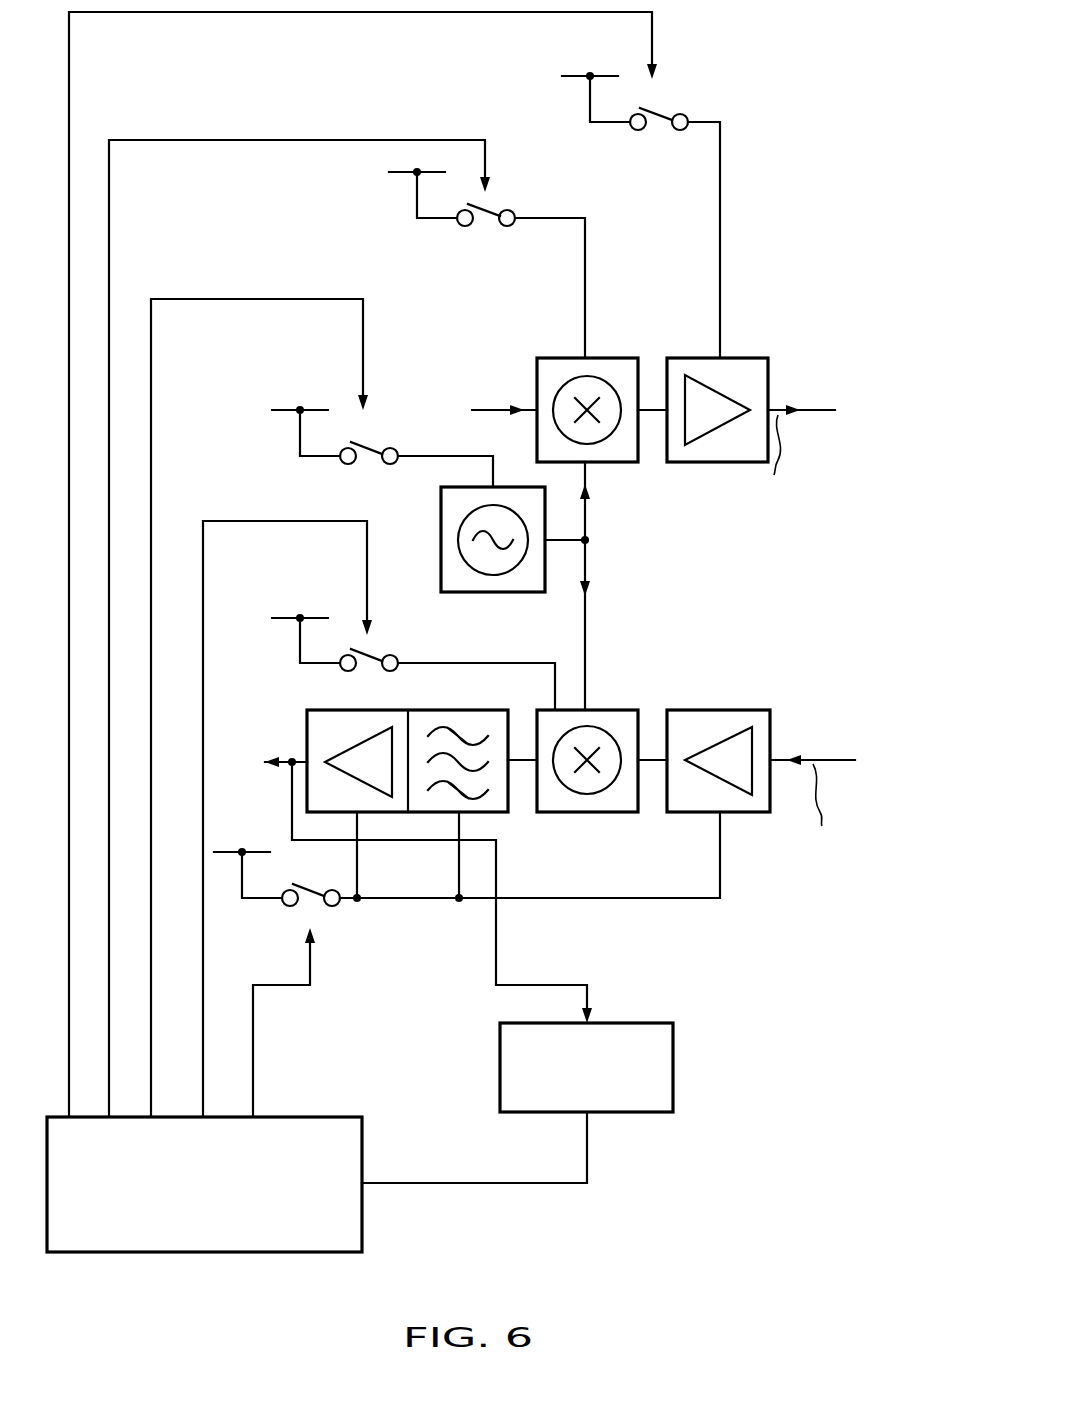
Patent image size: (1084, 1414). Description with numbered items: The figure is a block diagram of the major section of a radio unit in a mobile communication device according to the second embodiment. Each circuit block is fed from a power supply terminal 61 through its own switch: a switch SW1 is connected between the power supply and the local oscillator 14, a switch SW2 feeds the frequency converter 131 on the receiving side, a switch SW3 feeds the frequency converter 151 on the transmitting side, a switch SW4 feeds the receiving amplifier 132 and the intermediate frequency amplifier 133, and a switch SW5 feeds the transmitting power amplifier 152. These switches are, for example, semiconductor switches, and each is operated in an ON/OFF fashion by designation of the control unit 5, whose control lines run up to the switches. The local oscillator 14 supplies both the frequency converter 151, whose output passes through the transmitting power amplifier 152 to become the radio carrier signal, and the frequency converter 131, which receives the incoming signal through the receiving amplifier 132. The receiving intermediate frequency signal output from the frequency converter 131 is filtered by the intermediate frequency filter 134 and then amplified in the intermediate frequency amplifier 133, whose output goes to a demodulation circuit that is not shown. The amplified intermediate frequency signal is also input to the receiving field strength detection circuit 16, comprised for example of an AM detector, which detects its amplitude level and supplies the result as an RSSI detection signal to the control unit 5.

The control unit 5 is at (362, 1148).
The local oscillator 14 is at (492, 592).
The receiving field strength detection circuit 16 is at (673, 1062).
The power supply terminal 61 is at (580, 70).
The frequency converter 131 is at (600, 814).
The receiving amplifier 132 is at (732, 708).
The intermediate frequency amplifier 133 is at (345, 710).
The intermediate frequency filter 134 is at (441, 710).
The frequency converter 151 is at (620, 464).
The transmitting power amplifier 152 is at (745, 356).
The switch SW1 is at (374, 445).
The switch SW2 is at (372, 656).
The switch SW3 is at (500, 207).
The switch SW4 is at (335, 907).
The switch SW5 is at (672, 108).